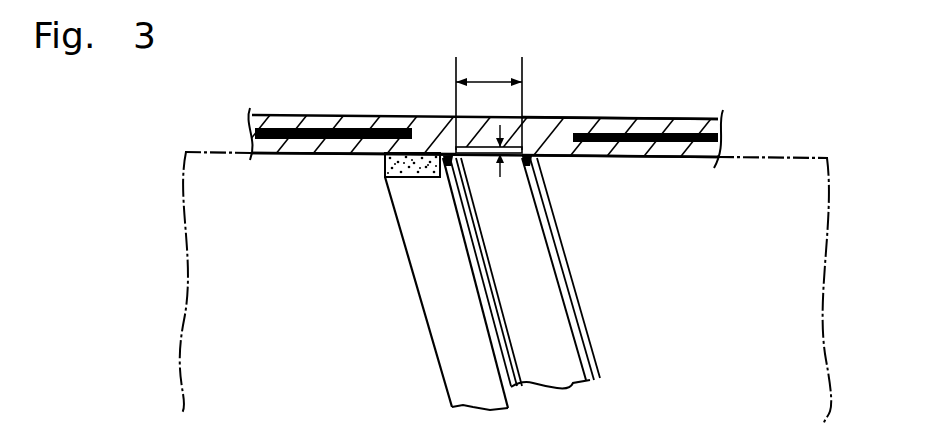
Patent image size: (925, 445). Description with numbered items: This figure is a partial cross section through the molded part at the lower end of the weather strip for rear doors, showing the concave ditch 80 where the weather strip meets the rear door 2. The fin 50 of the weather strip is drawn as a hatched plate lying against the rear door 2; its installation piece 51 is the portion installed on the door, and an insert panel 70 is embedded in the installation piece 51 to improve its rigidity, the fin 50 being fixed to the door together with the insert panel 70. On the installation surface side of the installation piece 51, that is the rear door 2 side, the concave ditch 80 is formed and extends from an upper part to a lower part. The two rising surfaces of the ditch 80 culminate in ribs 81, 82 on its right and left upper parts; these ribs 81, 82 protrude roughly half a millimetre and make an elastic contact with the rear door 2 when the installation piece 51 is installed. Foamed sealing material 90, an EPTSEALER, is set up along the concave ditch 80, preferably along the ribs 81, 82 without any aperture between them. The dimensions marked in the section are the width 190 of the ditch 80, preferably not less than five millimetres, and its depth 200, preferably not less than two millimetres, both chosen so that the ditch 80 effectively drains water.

The rear door 2 is at (768, 266).
The fin 50 is at (680, 119).
The installation piece 51 is at (552, 119).
The insert panel 70 is at (318, 128).
The concave ditch 80 is at (552, 333).
The rib 81 is at (558, 277).
The rib 82 is at (467, 227).
The foamed sealing material 90 is at (408, 262).
The width 190 is at (489, 100).
The depth 200 is at (498, 147).